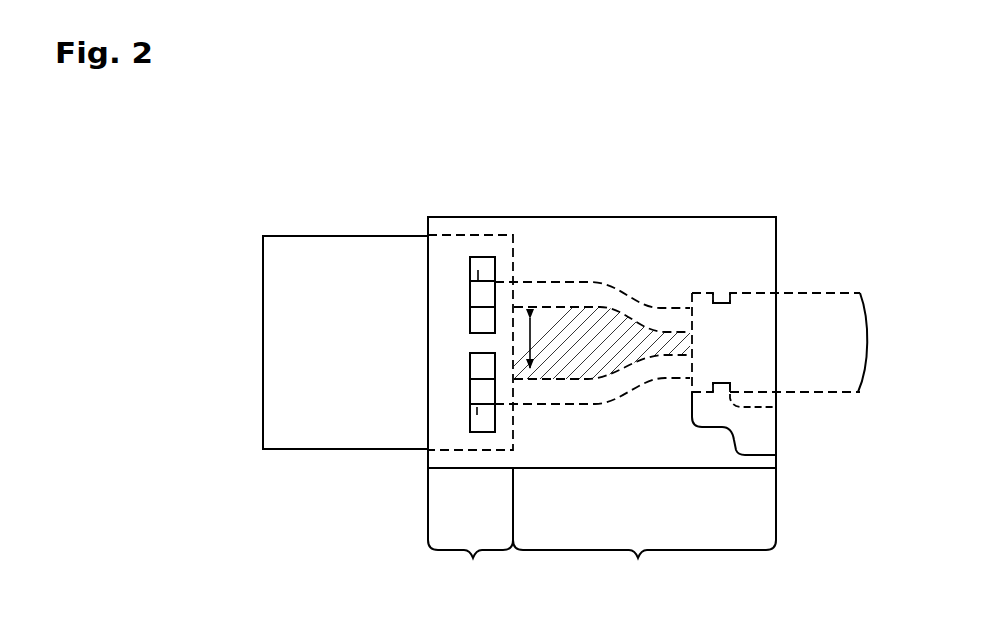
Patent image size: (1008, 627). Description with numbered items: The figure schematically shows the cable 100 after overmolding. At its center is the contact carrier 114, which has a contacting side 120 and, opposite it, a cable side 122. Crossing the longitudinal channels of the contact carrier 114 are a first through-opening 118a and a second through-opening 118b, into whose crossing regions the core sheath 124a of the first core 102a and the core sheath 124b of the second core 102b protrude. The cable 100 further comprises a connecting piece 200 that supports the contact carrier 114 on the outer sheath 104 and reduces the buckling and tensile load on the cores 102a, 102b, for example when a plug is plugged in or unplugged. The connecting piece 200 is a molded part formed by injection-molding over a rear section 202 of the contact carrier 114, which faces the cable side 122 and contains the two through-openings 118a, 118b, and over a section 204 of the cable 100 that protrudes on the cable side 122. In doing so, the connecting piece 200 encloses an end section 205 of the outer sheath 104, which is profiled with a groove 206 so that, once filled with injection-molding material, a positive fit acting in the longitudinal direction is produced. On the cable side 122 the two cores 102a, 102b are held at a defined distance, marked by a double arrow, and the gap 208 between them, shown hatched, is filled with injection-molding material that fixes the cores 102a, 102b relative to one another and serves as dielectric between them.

The cable 100 is at (664, 186).
The first core 102a is at (652, 306).
The second core 102b is at (652, 383).
The outer sheath 104 is at (832, 293).
The contact carrier 114 is at (291, 236).
The first through-opening 118a is at (481, 257).
The second through-opening 118b is at (480, 432).
The contacting side 120 is at (255, 255).
The cable side 122 is at (527, 238).
The core sheath of the first core 124a is at (478, 282).
The core sheath of the second core 124b is at (477, 407).
The connecting piece 200 is at (428, 342).
The rear section of the contact carrier 202 is at (470, 534).
The section of the cable protruding on the cable side 204 is at (644, 534).
The end section of the outer sheath 205 is at (776, 455).
The groove 206 is at (726, 300).
The gap 208 is at (600, 362).